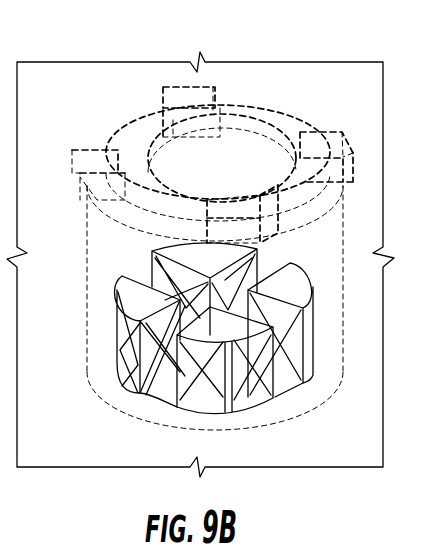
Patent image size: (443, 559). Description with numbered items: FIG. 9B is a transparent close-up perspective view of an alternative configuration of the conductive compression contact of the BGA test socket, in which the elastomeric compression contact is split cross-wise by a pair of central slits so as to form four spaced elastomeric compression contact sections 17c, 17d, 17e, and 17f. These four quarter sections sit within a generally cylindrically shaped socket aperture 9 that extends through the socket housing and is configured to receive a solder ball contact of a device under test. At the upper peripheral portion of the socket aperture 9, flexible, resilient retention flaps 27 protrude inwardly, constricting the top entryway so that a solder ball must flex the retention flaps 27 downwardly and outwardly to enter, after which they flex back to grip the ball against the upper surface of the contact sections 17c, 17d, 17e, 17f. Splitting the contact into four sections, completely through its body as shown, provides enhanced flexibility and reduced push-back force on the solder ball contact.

The retention flap 27 is at (150, 143).
The socket aperture 9 is at (113, 257).
The elastomeric compression contact section 17c is at (118, 358).
The elastomeric compression contact section 17d is at (250, 263).
The elastomeric compression contact section 17e is at (286, 340).
The elastomeric compression contact section 17f is at (240, 372).